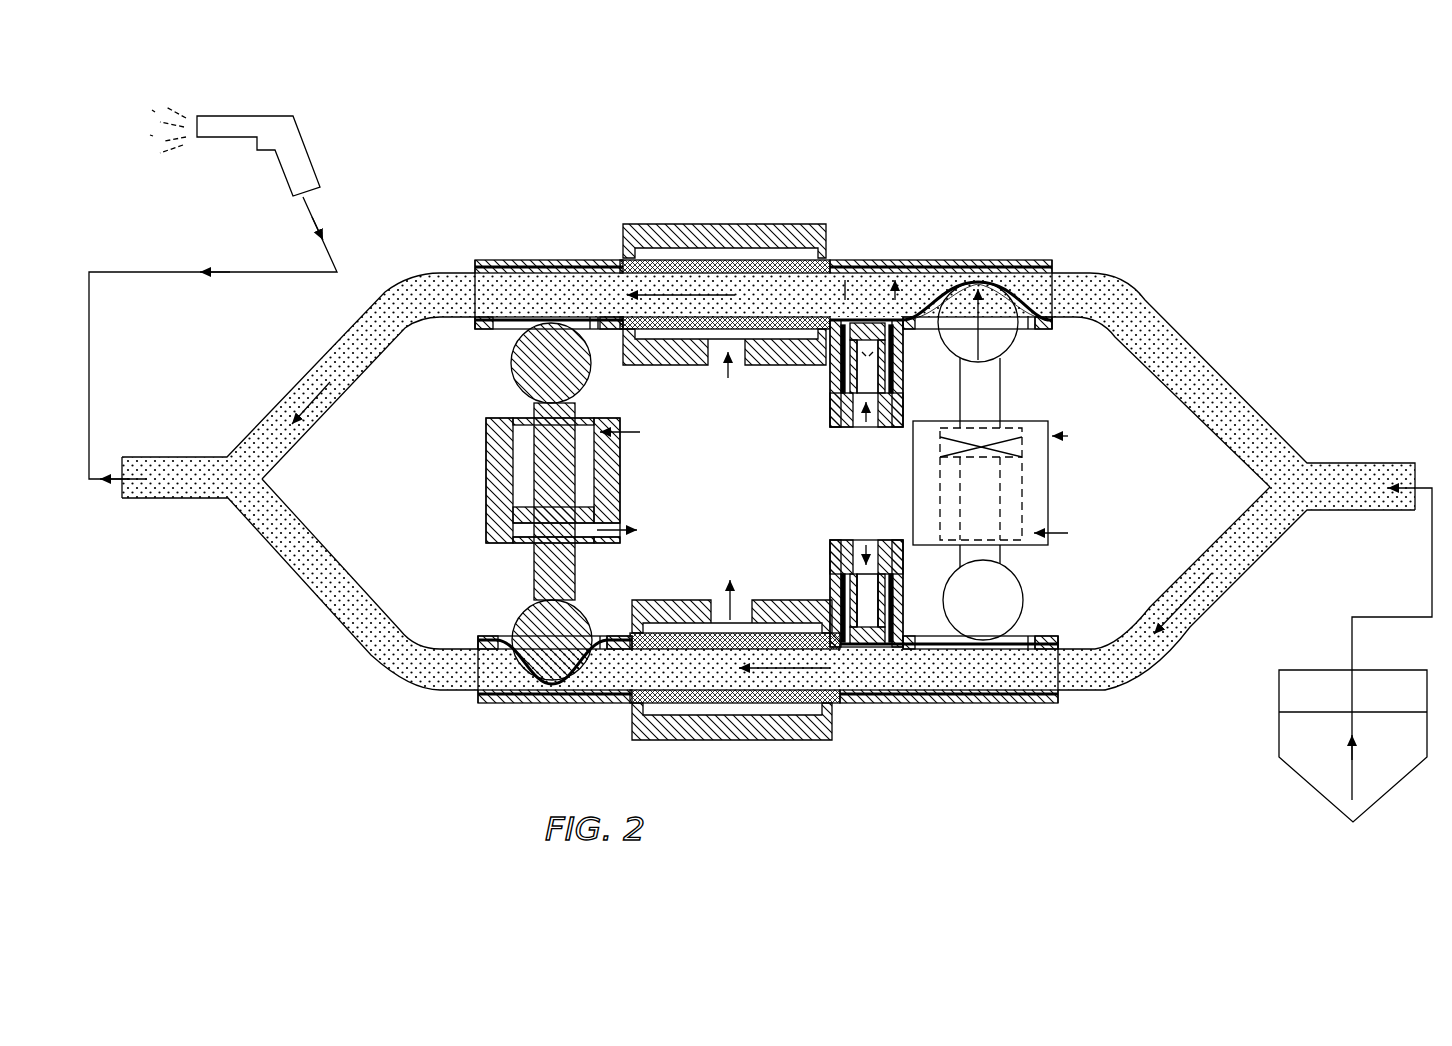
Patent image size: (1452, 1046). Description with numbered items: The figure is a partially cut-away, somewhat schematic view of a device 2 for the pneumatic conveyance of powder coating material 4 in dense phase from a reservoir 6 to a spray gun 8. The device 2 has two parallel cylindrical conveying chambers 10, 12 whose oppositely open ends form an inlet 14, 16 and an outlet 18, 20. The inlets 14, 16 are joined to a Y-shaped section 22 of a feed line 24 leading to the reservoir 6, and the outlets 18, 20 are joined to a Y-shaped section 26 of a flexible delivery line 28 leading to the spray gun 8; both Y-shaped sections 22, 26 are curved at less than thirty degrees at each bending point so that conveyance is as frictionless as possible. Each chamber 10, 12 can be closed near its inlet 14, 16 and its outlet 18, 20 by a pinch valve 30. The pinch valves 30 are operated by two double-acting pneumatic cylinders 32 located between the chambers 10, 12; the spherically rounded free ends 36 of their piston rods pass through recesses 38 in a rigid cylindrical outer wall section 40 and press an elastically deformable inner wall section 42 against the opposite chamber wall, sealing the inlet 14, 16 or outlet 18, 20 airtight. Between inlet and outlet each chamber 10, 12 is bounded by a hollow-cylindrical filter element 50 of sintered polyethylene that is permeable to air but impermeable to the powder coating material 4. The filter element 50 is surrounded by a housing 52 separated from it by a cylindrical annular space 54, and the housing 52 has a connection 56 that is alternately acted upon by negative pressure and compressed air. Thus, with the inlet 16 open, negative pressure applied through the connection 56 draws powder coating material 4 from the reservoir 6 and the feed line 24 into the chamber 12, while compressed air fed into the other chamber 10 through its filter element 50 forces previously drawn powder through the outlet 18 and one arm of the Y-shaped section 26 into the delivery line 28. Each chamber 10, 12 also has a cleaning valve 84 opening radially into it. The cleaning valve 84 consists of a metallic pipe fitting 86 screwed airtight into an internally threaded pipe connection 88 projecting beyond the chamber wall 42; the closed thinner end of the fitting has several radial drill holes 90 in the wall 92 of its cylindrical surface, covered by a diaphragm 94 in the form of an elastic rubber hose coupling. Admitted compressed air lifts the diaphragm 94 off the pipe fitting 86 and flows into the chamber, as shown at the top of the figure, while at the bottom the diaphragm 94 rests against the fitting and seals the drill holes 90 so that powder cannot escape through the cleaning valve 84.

The device 2 is at (913, 167).
The powder coating material 4 is at (403, 300).
The reservoir 6 is at (1312, 792).
The spray gun 8 is at (310, 128).
The conveying chamber 10 is at (747, 290).
The conveying chamber 12 is at (898, 677).
The inlet 14 is at (980, 253).
The inlet 16 is at (978, 712).
The outlet 18 is at (546, 255).
The outlet 20 is at (548, 712).
The Y-shaped section 22 is at (1225, 362).
The feed line 24 is at (1432, 568).
The Y-shaped section 26 is at (268, 552).
The flexible delivery line 28 is at (168, 275).
The pinch valve 30 is at (512, 335).
The double-acting pneumatic cylinder 32 is at (486, 492).
The spherically rounded free end 36 is at (582, 388).
The recess 38 is at (593, 326).
The rigid cylindrical outer wall section 40 is at (1032, 268).
The elastically deformable inner wall section 42 is at (880, 268).
The hollow-cylindrical filter element 50 is at (682, 260).
The housing 52 is at (789, 230).
The cylindrical annular space 54 is at (710, 258).
The connection 56 is at (737, 362).
The cleaning valve 84 is at (873, 527).
The metallic pipe fitting 86 is at (860, 432).
The pipe connection 88 is at (830, 410).
The radial drill holes 90 is at (853, 622).
The wall 92 is at (863, 618).
The diaphragm 94 is at (900, 622).